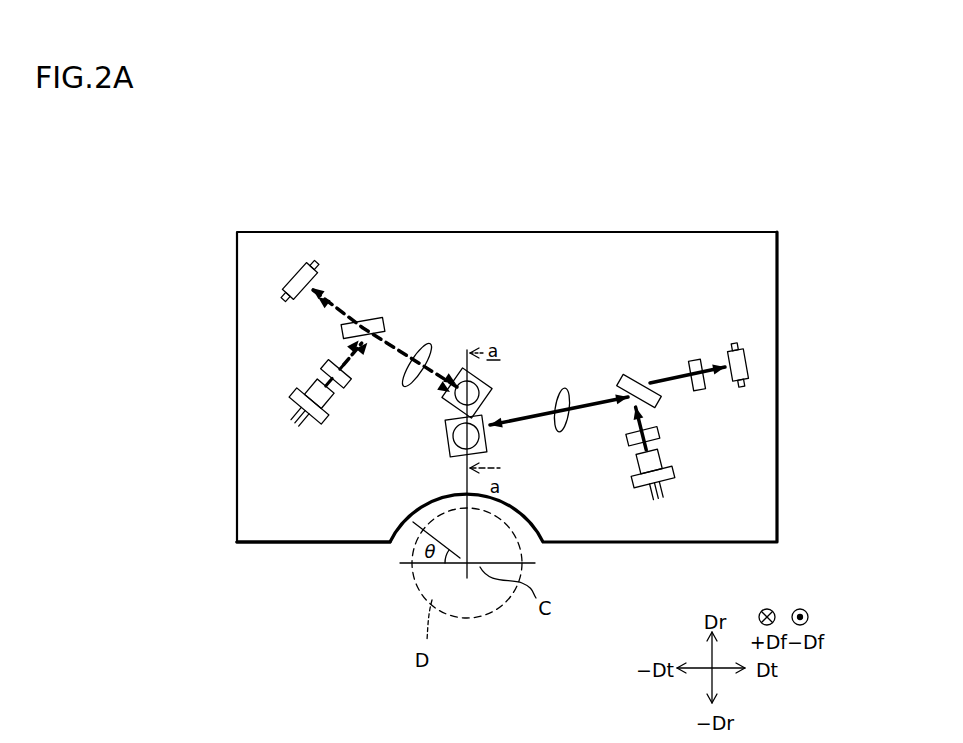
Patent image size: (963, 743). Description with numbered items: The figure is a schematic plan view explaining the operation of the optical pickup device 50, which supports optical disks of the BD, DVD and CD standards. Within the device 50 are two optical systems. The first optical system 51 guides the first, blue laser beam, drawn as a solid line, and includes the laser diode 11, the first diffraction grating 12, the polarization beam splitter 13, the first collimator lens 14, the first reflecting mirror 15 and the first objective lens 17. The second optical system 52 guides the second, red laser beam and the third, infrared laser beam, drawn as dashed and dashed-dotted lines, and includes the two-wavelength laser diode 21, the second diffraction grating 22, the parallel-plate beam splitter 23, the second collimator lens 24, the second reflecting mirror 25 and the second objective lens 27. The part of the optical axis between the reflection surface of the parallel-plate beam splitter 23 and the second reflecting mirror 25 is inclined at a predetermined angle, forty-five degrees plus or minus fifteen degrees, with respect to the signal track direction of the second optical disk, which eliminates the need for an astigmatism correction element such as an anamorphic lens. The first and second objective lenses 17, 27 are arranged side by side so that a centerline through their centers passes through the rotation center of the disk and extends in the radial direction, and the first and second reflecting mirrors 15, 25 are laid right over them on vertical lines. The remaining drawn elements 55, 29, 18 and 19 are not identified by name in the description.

The optical pickup device 50 is at (648, 140).
The housing 55 is at (282, 542).
The second optical system 52 is at (345, 290).
The light receiving element 29 is at (299, 262).
The parallel-plate beam splitter 23 is at (364, 318).
The second collimator lens 24 is at (421, 345).
The second reflecting mirror 25 is at (463, 368).
The first objective lens 17 is at (445, 437).
The second objective lens 27 is at (486, 382).
The first collimator lens 14 is at (568, 428).
The polarization beam splitter 13 is at (627, 373).
The first optical system 51 is at (658, 397).
The lens 18 is at (696, 359).
The light receiving element 19 is at (736, 345).
The laser diode 11 is at (677, 480).
The first diffraction grating 12 is at (657, 431).
The two-wavelength laser diode 21 is at (322, 420).
The second diffraction grating 22 is at (327, 363).
The first reflecting mirror 15 is at (487, 438).